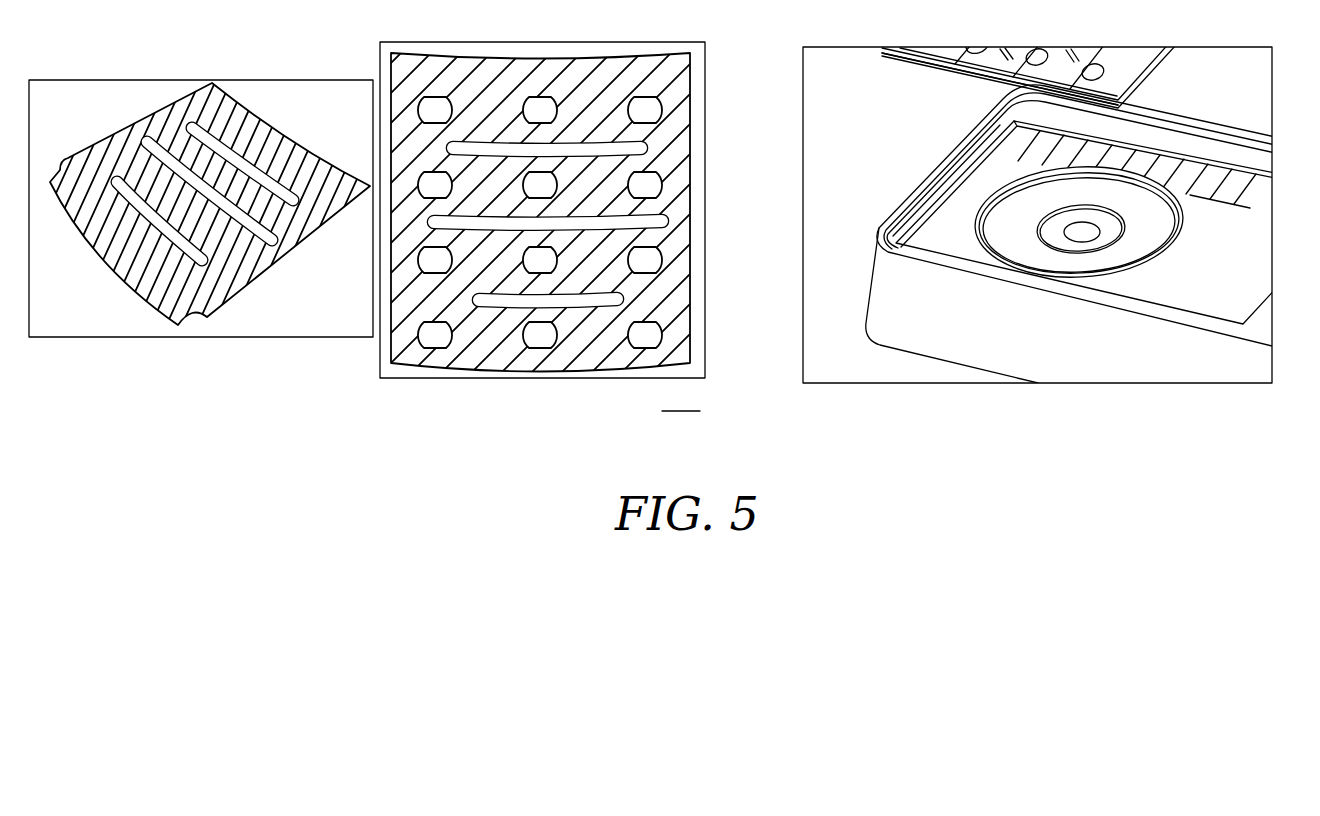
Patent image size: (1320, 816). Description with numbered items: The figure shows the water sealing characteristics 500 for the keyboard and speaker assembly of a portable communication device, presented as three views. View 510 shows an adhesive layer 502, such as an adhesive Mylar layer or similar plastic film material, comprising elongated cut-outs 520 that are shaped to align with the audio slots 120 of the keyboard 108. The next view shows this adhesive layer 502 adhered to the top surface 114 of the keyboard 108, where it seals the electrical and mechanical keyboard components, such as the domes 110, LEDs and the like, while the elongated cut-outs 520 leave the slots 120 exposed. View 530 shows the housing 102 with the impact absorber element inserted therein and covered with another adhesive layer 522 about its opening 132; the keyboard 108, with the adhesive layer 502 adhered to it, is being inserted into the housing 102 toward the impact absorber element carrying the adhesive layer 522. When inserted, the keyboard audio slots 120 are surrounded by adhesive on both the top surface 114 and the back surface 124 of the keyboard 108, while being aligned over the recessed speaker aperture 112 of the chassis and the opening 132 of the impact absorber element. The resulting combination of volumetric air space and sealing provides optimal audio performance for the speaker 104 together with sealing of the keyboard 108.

The housing 102 is at (877, 337).
The speaker 104 is at (1097, 238).
The keyboard 108 is at (705, 67).
The domes 110 is at (655, 187).
The speaker aperture 112 is at (1053, 232).
The top surface 114 is at (690, 95).
The slots 120 is at (647, 147).
The back surface 124 is at (917, 65).
The opening 132 is at (1003, 190).
The water sealing characteristics 500 is at (1311, 481).
The adhesive layer 502 is at (289, 256).
The view 510 is at (353, 409).
The elongated cut-outs 520 is at (116, 181).
The adhesive layer 522 is at (957, 243).
The view 530 is at (1274, 414).